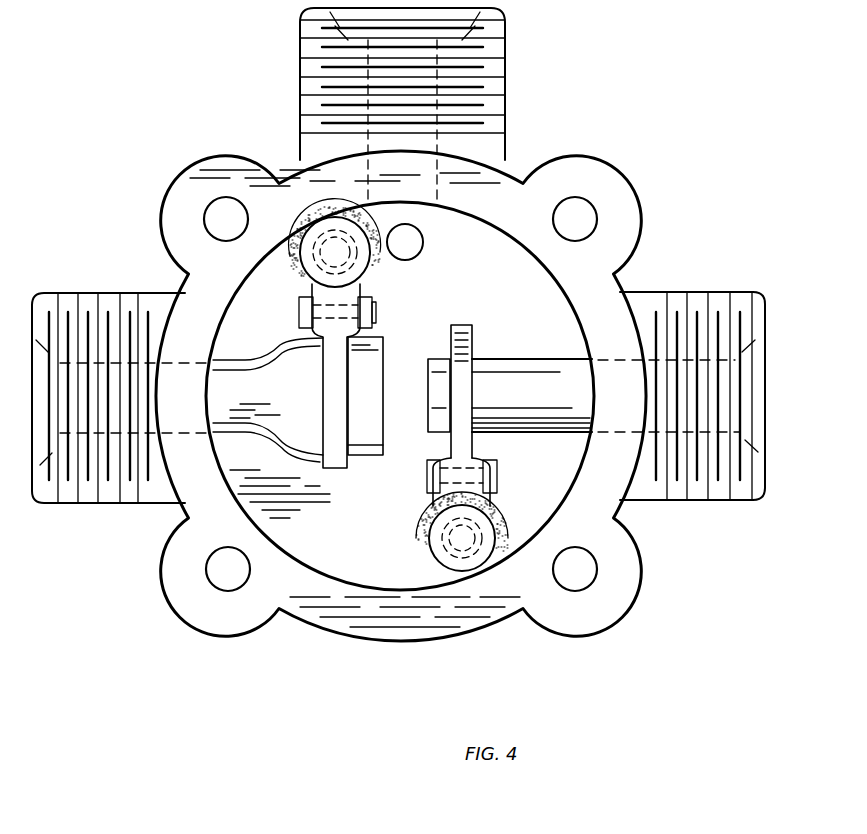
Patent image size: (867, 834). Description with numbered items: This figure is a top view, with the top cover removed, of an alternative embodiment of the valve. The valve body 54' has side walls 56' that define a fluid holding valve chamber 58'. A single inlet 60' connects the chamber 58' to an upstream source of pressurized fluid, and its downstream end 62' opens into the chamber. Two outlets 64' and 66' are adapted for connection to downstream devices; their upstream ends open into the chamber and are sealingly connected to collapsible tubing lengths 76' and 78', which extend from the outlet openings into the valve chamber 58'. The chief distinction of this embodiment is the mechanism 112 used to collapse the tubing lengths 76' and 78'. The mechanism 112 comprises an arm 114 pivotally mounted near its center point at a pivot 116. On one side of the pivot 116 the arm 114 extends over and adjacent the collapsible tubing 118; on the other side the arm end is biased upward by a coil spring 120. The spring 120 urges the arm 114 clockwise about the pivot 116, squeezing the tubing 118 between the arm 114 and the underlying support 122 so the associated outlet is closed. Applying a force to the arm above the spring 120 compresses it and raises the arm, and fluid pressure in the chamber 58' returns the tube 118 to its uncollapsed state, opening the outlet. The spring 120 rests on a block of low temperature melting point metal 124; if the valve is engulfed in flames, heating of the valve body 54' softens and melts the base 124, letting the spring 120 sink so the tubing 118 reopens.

The valve body 54' is at (401, 410).
The side walls 56' is at (355, 429).
The valve chamber 58' is at (400, 396).
The inlet 60' is at (425, 104).
The downstream end of inlet 62' is at (433, 244).
The outlet 64' is at (696, 409).
The outlet 66' is at (121, 383).
The collapsible tubing length 76' is at (510, 388).
The collapsible tubing length 78' is at (268, 390).
The mechanism 112 is at (385, 318).
The arm 114 is at (340, 385).
The pivot 116 is at (297, 313).
The tubing 118 is at (383, 440).
The coil spring 120 is at (330, 228).
The underlying support 122 is at (326, 524).
The low temperature melting point metal block 124 is at (380, 263).